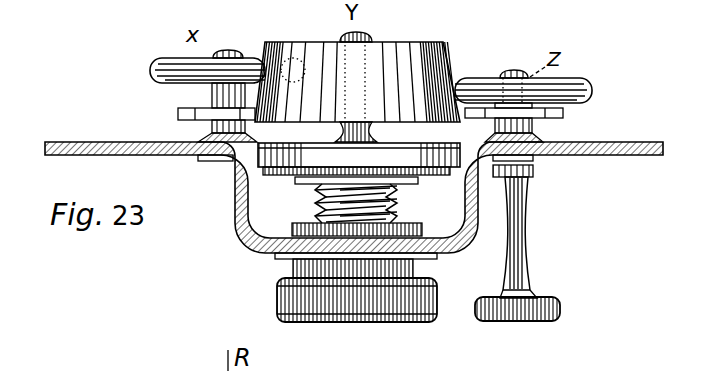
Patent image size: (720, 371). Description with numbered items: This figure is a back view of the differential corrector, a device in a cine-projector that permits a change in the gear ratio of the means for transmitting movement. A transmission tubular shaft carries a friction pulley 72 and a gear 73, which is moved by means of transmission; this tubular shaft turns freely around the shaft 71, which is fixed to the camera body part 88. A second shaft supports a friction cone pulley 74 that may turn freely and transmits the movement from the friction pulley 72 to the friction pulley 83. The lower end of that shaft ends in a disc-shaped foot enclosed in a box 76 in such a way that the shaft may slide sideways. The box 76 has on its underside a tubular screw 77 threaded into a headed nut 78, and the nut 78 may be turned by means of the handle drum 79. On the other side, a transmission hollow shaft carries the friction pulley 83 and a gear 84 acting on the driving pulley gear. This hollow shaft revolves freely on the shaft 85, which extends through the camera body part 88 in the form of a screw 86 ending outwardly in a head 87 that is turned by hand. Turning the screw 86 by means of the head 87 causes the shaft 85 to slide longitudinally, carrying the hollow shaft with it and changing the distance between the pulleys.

The shaft 71 is at (200, 44).
The friction pulley 72 is at (193, 69).
The gear 73 is at (201, 112).
The friction cone pulley 74 is at (357, 77).
The box 76 is at (359, 163).
The tubular screw 77 is at (363, 210).
The headed nut 78 is at (293, 262).
The handle drum 79 is at (357, 314).
The friction pulley 83 is at (540, 89).
The gear 84 is at (529, 121).
The shaft 85 is at (514, 56).
The screw 86 is at (535, 164).
The head 87 is at (534, 251).
The camera body part 88 is at (357, 194).